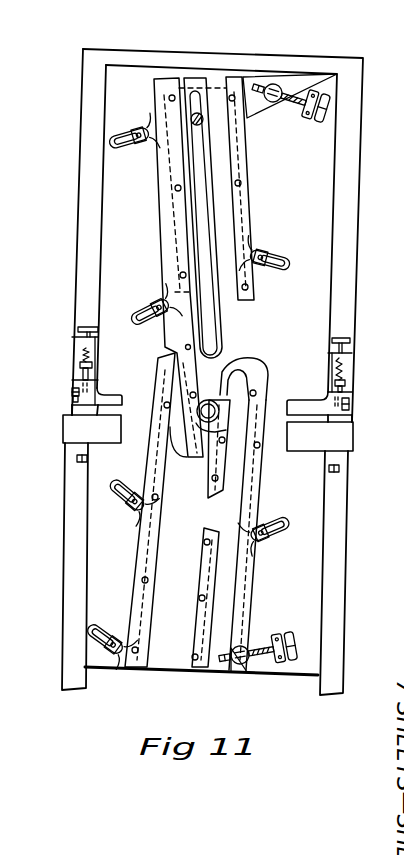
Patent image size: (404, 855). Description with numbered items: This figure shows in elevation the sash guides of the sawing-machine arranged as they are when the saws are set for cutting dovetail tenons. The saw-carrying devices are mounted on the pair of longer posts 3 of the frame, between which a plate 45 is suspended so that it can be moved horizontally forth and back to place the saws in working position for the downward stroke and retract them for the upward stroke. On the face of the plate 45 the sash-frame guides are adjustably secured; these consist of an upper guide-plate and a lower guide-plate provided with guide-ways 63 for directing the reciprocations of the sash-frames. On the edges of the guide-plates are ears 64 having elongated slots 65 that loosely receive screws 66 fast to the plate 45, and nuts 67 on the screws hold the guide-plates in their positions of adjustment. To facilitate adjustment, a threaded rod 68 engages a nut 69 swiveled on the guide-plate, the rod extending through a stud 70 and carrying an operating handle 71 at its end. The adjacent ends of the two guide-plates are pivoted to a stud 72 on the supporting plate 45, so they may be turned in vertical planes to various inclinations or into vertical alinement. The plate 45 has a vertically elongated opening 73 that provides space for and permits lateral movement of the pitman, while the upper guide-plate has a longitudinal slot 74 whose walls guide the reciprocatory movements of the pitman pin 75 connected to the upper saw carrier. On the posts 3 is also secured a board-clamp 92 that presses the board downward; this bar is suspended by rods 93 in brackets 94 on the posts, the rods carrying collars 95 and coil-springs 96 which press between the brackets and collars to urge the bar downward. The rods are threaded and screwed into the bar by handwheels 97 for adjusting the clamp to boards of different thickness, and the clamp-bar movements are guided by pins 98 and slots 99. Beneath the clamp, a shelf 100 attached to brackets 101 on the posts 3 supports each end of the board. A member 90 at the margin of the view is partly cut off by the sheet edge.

The longer posts 3 is at (62, 672).
The plate 45 is at (112, 240).
The guide-ways 63 is at (175, 84).
The ears 64 is at (110, 148).
The elongated slots 65 is at (113, 138).
The screws 66 is at (137, 128).
The nuts 67 is at (137, 149).
The threaded rod 68 is at (301, 97).
The nut 69 is at (279, 87).
The stud 70 is at (311, 116).
The operating handle 71 is at (330, 103).
The stud 72 is at (214, 407).
The vertically elongated opening 73 is at (249, 129).
The longitudinal slot 74 is at (198, 205).
The pitman pin 75 is at (198, 113).
The adjacent member 90 is at (7, 457).
The board-clamp 92 is at (104, 396).
The rods 93 is at (97, 334).
The brackets 94 is at (76, 345).
The collars 95 is at (81, 366).
The coil-springs 96 is at (80, 355).
The handwheels 97 is at (82, 326).
The pins 98 is at (74, 392).
The slots 99 is at (73, 399).
The shelf 100 is at (70, 437).
The brackets 101 is at (70, 449).